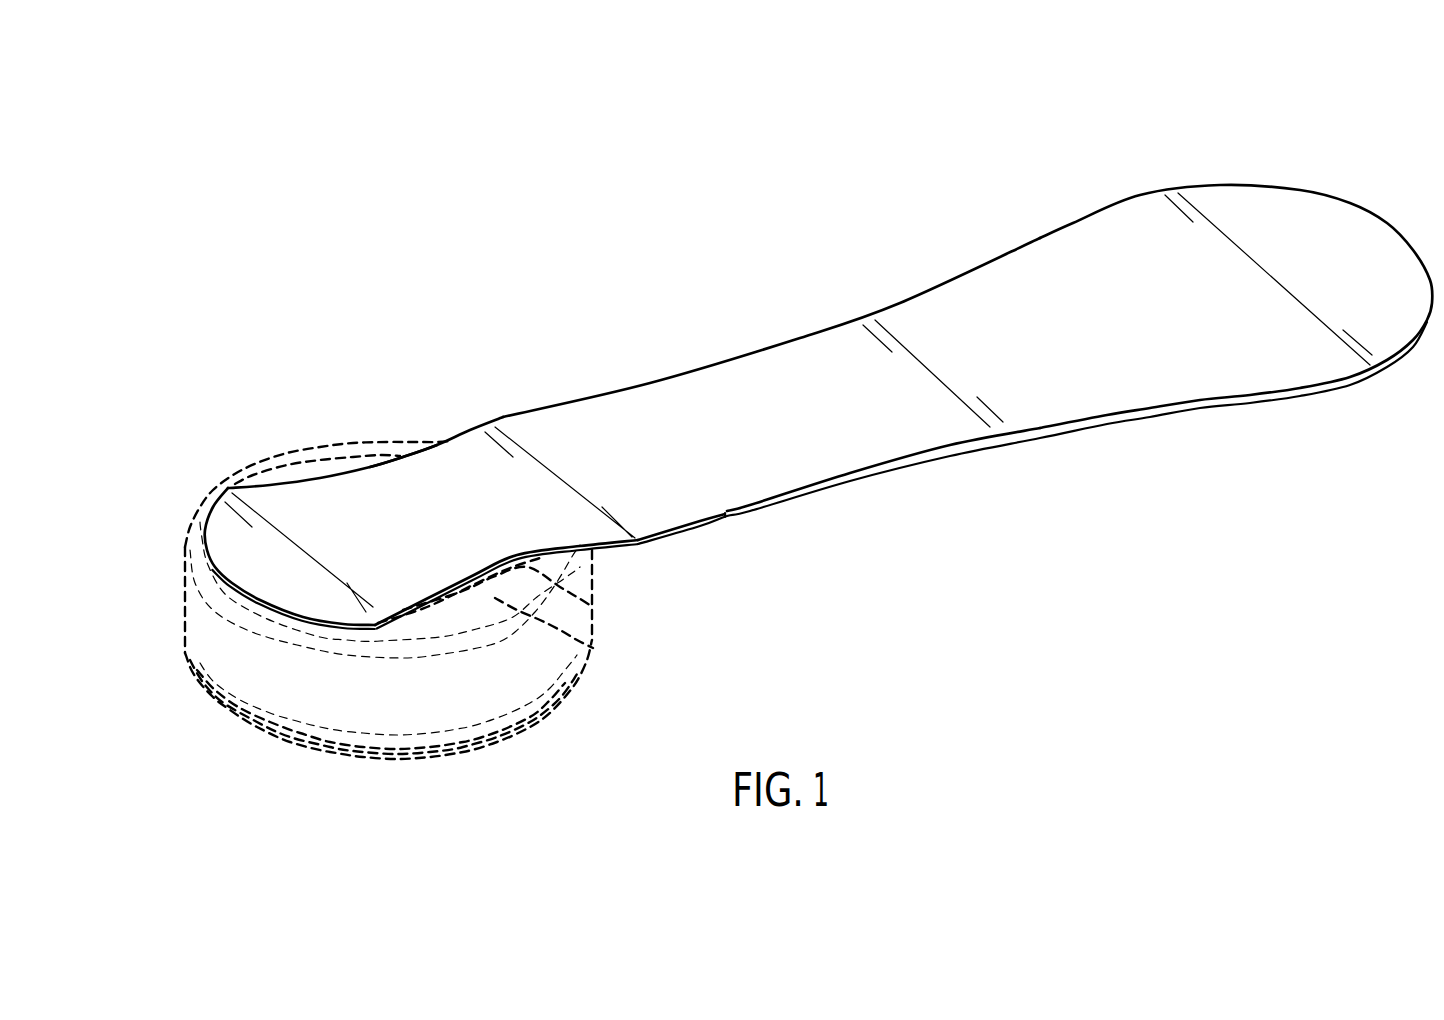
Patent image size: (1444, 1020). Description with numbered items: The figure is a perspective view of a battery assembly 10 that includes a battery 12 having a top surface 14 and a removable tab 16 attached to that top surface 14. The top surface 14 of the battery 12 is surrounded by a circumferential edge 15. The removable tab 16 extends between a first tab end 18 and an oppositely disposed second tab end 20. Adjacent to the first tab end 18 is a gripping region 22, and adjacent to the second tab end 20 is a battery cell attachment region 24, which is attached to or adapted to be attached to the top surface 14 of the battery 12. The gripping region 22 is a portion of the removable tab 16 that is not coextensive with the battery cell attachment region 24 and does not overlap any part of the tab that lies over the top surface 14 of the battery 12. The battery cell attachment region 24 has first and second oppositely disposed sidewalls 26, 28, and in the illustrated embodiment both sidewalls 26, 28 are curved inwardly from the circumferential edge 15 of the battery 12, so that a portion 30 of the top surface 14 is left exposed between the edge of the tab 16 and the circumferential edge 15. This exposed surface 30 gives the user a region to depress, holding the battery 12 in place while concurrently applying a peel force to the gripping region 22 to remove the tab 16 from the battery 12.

The battery assembly 10 is at (1180, 138).
The battery 12 is at (548, 684).
The top surface 14 is at (393, 448).
The circumferential edge 15 is at (597, 649).
The removable tab 16 is at (803, 338).
The first tab end 18 is at (1400, 234).
The second tab end 20 is at (216, 568).
The gripping region 22 is at (1029, 351).
The battery cell attachment region 24 is at (445, 526).
The first sidewall 26 is at (327, 481).
The second sidewall 28 is at (392, 608).
The exposed portion of the top surface 30 is at (342, 463).